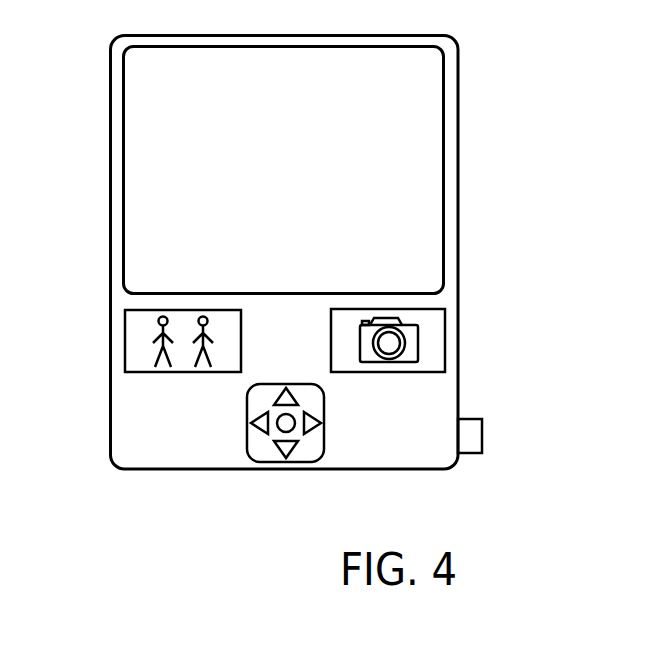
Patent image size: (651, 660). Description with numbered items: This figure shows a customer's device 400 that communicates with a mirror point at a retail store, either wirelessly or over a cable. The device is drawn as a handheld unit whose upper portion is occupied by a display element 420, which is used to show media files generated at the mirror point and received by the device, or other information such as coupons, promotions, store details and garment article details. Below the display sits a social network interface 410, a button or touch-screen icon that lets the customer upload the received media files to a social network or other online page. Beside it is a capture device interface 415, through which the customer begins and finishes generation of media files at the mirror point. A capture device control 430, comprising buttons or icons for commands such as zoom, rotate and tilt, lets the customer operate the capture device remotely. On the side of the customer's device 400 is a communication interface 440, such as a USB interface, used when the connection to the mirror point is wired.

The customer's device 400 is at (110, 115).
The display element 420 is at (123, 178).
The social network interface 410 is at (125, 343).
The capture device interface 415 is at (458, 333).
The capture device control 430 is at (247, 421).
The communication interface 440 is at (482, 436).